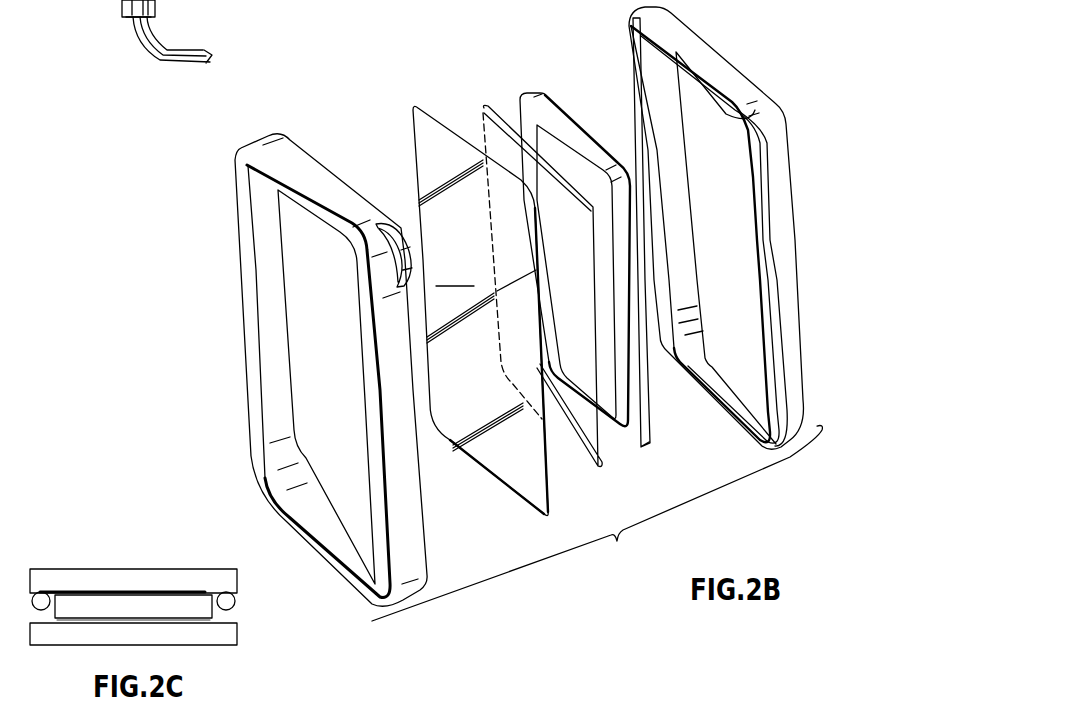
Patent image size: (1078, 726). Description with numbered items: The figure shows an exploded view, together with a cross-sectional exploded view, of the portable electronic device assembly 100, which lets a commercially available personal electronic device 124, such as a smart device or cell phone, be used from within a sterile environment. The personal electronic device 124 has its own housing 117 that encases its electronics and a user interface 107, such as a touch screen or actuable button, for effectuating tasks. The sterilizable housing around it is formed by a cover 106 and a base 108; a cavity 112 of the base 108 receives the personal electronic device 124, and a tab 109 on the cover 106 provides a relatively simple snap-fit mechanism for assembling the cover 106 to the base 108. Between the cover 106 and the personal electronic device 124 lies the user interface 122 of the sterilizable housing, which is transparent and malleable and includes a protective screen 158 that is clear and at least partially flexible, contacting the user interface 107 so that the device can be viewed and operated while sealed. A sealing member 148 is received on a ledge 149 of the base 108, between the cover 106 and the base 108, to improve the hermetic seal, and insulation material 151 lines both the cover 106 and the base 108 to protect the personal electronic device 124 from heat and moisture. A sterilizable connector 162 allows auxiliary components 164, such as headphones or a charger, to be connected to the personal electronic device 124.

In FIG. 2B, the portable electronic device assembly 100 is at (597, 524).
In FIG. 2B, the cover 106 is at (250, 160).
In FIG. 2B, the user interface 107 is at (570, 173).
In FIG. 2B, the base 108 is at (778, 180).
In FIG. 2C, the base 108 is at (167, 633).
In FIG. 2B, the tab 109 is at (392, 226).
In FIG. 2B, the cavity 112 is at (735, 231).
In FIG. 2B, the housing 117 is at (636, 399).
In FIG. 2B, the user interface 122 is at (394, 125).
In FIG. 2C, the user interface 122 is at (135, 577).
In FIG. 2B, the personal electronic device 124 is at (529, 92).
In FIG. 2C, the personal electronic device 124 is at (160, 605).
In FIG. 2B, the sealing member 148 is at (483, 110).
In FIG. 2C, the sealing member 148 is at (40, 592).
In FIG. 2B, the ledge 149 is at (647, 67).
In FIG. 2C, the insulation material 151 is at (208, 590).
In FIG. 2B, the protective screen 158 is at (457, 274).
In FIG. 2B, the sterilizable connector 162 is at (84, 2).
In FIG. 2B, the auxiliary components 164 is at (175, 50).